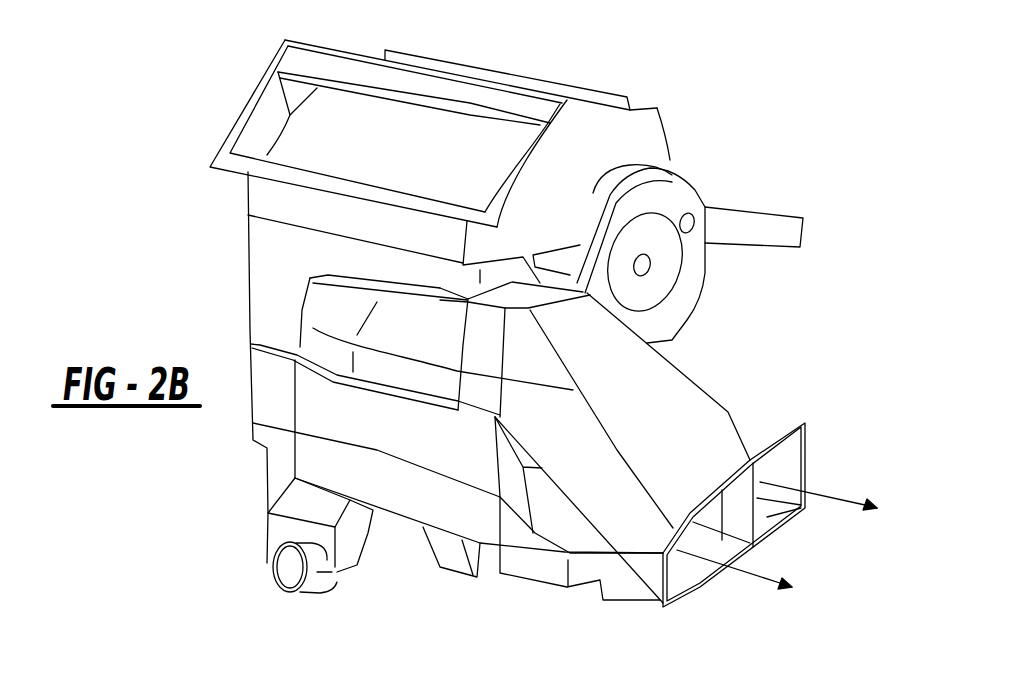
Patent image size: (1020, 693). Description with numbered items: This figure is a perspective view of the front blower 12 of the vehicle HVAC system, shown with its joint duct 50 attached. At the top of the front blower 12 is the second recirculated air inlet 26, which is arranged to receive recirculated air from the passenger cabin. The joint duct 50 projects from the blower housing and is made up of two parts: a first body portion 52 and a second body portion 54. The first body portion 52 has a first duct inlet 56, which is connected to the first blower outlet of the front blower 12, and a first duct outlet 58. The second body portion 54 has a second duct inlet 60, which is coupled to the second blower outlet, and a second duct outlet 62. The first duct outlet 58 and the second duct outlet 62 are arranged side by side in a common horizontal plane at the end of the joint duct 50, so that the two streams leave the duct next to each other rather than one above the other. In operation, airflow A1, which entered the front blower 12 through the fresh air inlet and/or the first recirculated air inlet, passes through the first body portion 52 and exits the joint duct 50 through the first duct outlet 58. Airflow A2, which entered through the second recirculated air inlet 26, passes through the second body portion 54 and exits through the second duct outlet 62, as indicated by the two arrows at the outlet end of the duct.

The front blower 12 is at (188, 196).
The second recirculated air inlet 26 is at (265, 114).
The joint duct 50 is at (748, 382).
The first body portion 52 is at (667, 407).
The second body portion 54 is at (767, 430).
The first duct inlet 56 is at (460, 380).
The first duct outlet 58 is at (707, 570).
The second duct inlet 60 is at (495, 447).
The second duct outlet 62 is at (787, 520).
The airflow A1 is at (768, 580).
The airflow A2 is at (828, 500).